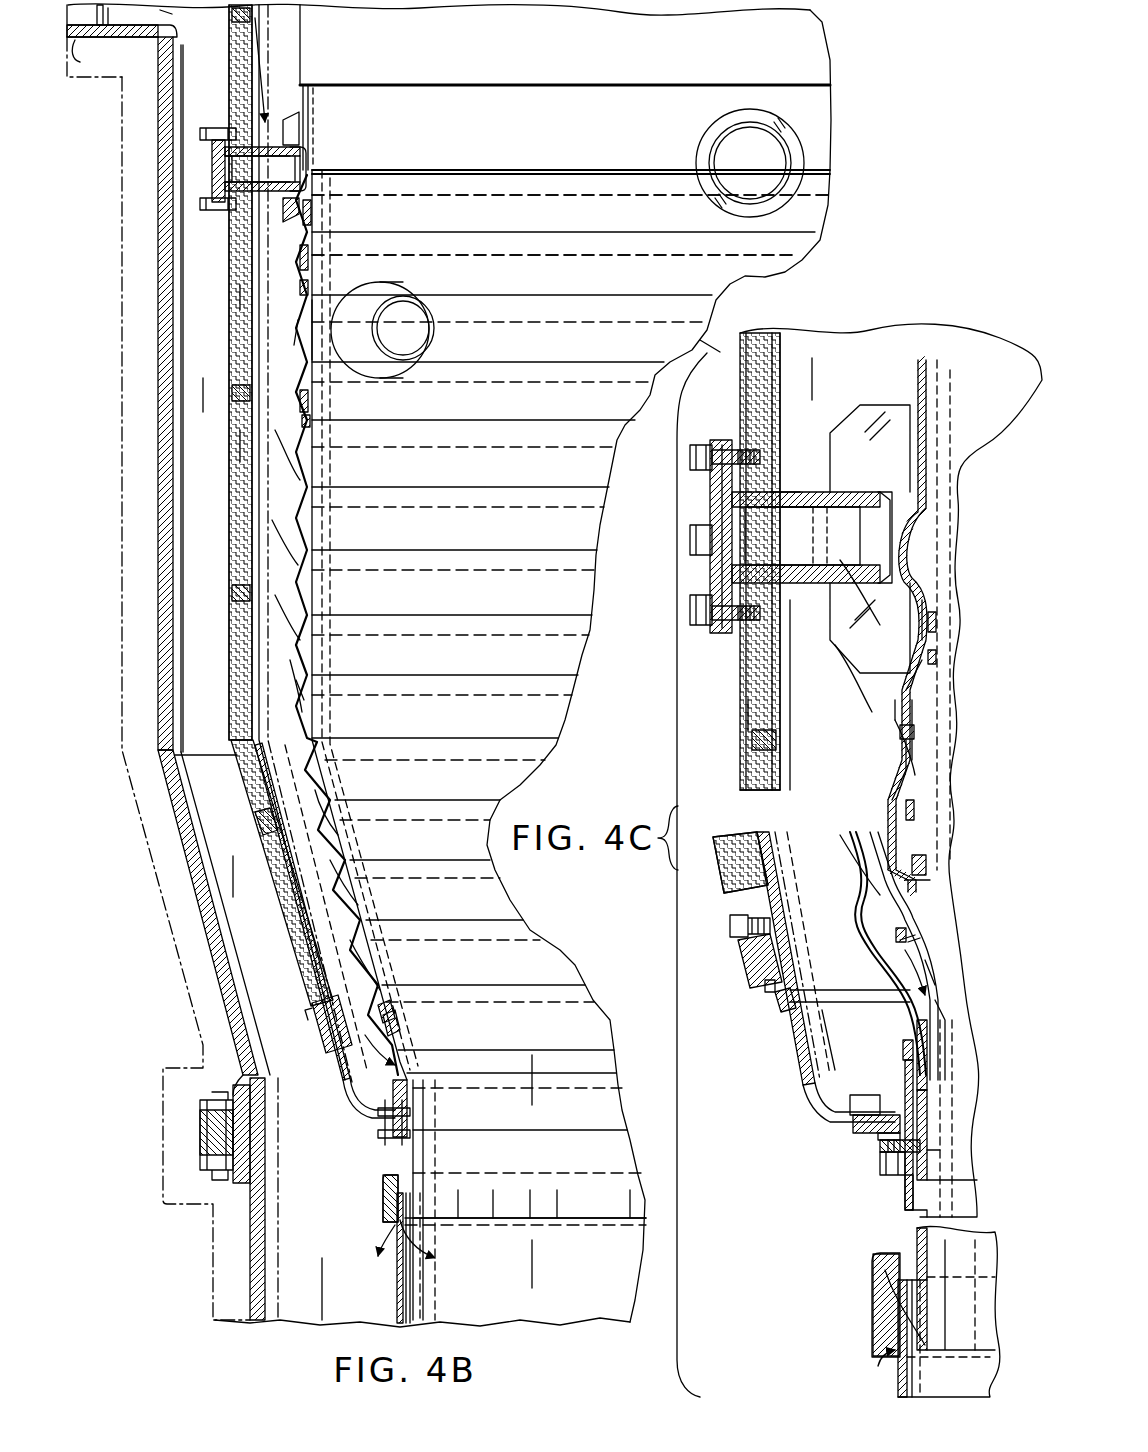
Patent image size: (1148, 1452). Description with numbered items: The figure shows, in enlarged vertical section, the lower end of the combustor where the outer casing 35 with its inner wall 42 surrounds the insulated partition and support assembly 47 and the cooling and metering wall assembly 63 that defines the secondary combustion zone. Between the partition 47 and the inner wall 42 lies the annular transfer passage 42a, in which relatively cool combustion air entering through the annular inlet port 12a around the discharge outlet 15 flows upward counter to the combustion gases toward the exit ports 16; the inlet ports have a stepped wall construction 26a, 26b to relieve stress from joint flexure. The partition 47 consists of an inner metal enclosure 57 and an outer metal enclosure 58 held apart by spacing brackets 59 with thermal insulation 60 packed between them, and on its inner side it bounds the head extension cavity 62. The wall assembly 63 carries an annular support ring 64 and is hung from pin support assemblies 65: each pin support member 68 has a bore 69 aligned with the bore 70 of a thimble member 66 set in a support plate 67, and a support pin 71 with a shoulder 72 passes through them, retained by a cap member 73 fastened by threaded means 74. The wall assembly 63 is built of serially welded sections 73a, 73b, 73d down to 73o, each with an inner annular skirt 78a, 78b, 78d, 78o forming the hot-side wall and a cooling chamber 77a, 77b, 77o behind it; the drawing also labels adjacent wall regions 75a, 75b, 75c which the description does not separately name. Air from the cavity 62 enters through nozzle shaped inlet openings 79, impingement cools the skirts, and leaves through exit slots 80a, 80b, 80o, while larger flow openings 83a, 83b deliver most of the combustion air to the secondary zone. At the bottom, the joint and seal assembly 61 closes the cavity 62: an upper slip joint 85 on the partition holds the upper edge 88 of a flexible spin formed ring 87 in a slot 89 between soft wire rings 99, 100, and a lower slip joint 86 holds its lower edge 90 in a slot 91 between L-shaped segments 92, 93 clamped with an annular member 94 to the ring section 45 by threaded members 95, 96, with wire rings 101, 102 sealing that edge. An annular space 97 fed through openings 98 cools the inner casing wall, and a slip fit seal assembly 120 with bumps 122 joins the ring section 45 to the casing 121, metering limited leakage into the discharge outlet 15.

In FIG. 4B, the annular combustion air inlet port 12a is at (260, 1232).
In FIG. 4B, the discharge outlet 15 is at (543, 1163).
In FIG. 4C, the discharge outlet 15 is at (975, 1266).
In FIG. 4B, the combustion air exit ports 16 is at (100, 22).
In FIG. 4B, the stepped wall construction 26a is at (95, 40).
In FIG. 4B, the stepped wall construction 26b is at (88, 40).
In FIG. 4B, the outer casing 35 is at (158, 520).
In FIG. 4B, the inner wall of the outer casing 42 is at (165, 818).
In FIG. 4B, the annular transport chamber or transfer passage 42a is at (228, 780).
In FIG. 4B, the lowermost section of the inner casing 45 is at (409, 1112).
In FIG. 4C, the lowermost section of the inner casing 45 is at (928, 1078).
In FIG. 4B, the annular insulated partition and support assembly 47 is at (232, 298).
In FIG. 4B, the inner cylindrical metal enclosure 57 is at (260, 622).
In FIG. 4C, the inner cylindrical metal enclosure 57 is at (781, 632).
In FIG. 4B, the outer cylindrical metal enclosure 58 is at (233, 540).
In FIG. 4C, the outer cylindrical metal enclosure 58 is at (742, 690).
In FIG. 4B, the annular spacing brackets 59 is at (233, 38).
In FIG. 4C, the annular spacing brackets 59 is at (772, 742).
In FIG. 4B, the thermal insulation 60 is at (237, 435).
In FIG. 4C, the thermal insulation 60 is at (745, 720).
In FIG. 4B, the joint or seal assembly 61 is at (340, 1078).
In FIG. 4C, the joint or seal assembly 61 is at (800, 1082).
In FIG. 4B, the head extension cavity 62 is at (318, 934).
In FIG. 4C, the head extension cavity 62 is at (840, 709).
In FIG. 4B, the cooling and metering wall assembly 63 is at (298, 685).
In FIG. 4C, the cooling and metering wall assembly 63 is at (900, 735).
In FIG. 4B, the annular support ring 64 is at (308, 105).
In FIG. 4B, the pin support assemblies 65 is at (210, 165).
In FIG. 4C, the pin support assemblies 65 is at (708, 568).
In FIG. 4B, the thimble members 66 is at (306, 150).
In FIG. 4C, the thimble members 66 is at (845, 492).
In FIG. 4B, the support plates 67 is at (296, 222).
In FIG. 4C, the support plates 67 is at (858, 430).
In FIG. 4B, the annular pin support members 68 is at (240, 147).
In FIG. 4C, the annular pin support members 68 is at (792, 496).
In FIG. 4C, the bores of the pin support members 69 is at (782, 492).
In FIG. 4C, the bore of the thimble member 70 is at (886, 494).
In FIG. 4B, the support pins 71 is at (256, 190).
In FIG. 4C, the support pins 71 is at (800, 584).
In FIG. 4C, the shoulder 72 is at (798, 563).
In FIG. 4C, the cap member 73 is at (712, 510).
In FIG. 4C, the annular shaped and formed section 73a is at (936, 650).
In FIG. 4B, the annular shaped and formed section 73b is at (309, 260).
In FIG. 4C, the annular shaped and formed section 73b is at (916, 805).
In FIG. 4B, the annular shaped and formed section 73d is at (312, 418).
In FIG. 4B, the annular shaped and formed section 73o is at (392, 1020).
In FIG. 4C, the annular shaped and formed section 73o is at (908, 936).
In FIG. 4B, the threaded means 74 is at (218, 130).
In FIG. 4C, the threaded means 74 is at (734, 448).
In FIG. 4B, the filter section 75a is at (424, 197).
In FIG. 4C, the filter section 75a is at (918, 622).
In FIG. 4B, the filter section 75b is at (441, 257).
In FIG. 4C, the filter section 75b is at (918, 762).
In FIG. 4B, the filter section 75c is at (316, 340).
In FIG. 4C, the annular cooling chamber 77a is at (915, 676).
In FIG. 4C, the annular cooling chamber 77b is at (908, 824).
In FIG. 4C, the annular cooling chamber 77o is at (880, 910).
In FIG. 4B, the inner annular skirt 78a is at (312, 212).
In FIG. 4C, the inner annular skirt 78a is at (936, 660).
In FIG. 4B, the inner annular skirt 78b is at (308, 290).
In FIG. 4C, the inner annular skirt 78b is at (928, 860).
In FIG. 4B, the inner annular skirt 78d is at (310, 400).
In FIG. 4C, the inner annular skirt 78o is at (915, 940).
In FIG. 4B, the nozzle shaped combustion air inlet openings 79 is at (300, 530).
In FIG. 4C, the nozzle shaped combustion air inlet openings 79 is at (900, 640).
In FIG. 4C, the combustion air exit slot 80a is at (920, 714).
In FIG. 4C, the combustion air exit slot 80b is at (920, 882).
In FIG. 4C, the combustion air exit slot 80o is at (928, 965).
In FIG. 4B, the flow opening 83a is at (412, 337).
In FIG. 4B, the flow opening 83b is at (712, 155).
In FIG. 4B, the upper slip joint 85 is at (314, 1012).
In FIG. 4C, the upper slip joint 85 is at (732, 930).
In FIG. 4B, the lower slip joint 86 is at (390, 1138).
In FIG. 4C, the lower slip joint 86 is at (852, 1150).
In FIG. 4B, the flexible annular spin formed metallic ring 87 is at (350, 1110).
In FIG. 4C, the flexible annular spin formed metallic ring 87 is at (806, 1056).
In FIG. 4C, the upper peripheral edge portion 88 is at (760, 968).
In FIG. 4C, the slot 89 is at (784, 1006).
In FIG. 4C, the lower peripheral edge section 90 is at (884, 1150).
In FIG. 4C, the slot 91 is at (862, 1112).
In FIG. 4C, the annular L-shaped segment 92 is at (900, 1100).
In FIG. 4C, the annular L-shaped segment 93 is at (888, 1176).
In FIG. 4C, the annular member 94 is at (940, 1040).
In FIG. 4C, the threaded member 95 is at (905, 1048).
In FIG. 4C, the threaded member 96 is at (906, 1178).
In FIG. 4C, the annular space 97 is at (928, 1102).
In FIG. 4C, the openings 98 is at (928, 1167).
In FIG. 4C, the annealed soft metal wire ring 99 is at (800, 990).
In FIG. 4C, the annealed soft metal wire ring 100 is at (765, 986).
In FIG. 4C, the annealed soft metal wire ring 101 is at (837, 1040).
In FIG. 4C, the annealed soft metal wire ring 102 is at (856, 1126).
In FIG. 4B, the slip fit seal assembly 120 is at (382, 1200).
In FIG. 4C, the slip fit seal assembly 120 is at (870, 1306).
In FIG. 4B, the casing 121 is at (398, 1288).
In FIG. 4C, the casing 121 is at (898, 1386).
In FIG. 4B, the lateral projections or bumps 122 is at (410, 1230).
In FIG. 4C, the lateral projections or bumps 122 is at (888, 1336).